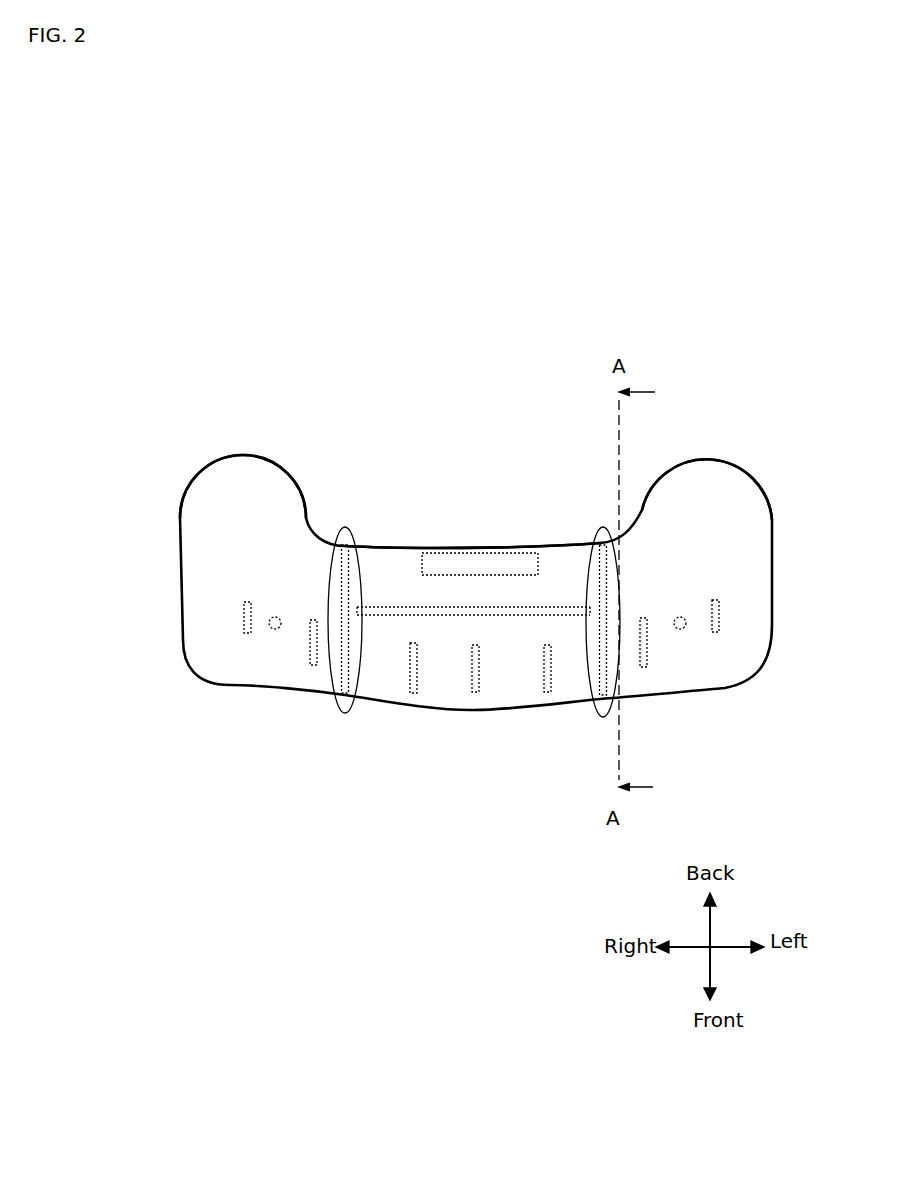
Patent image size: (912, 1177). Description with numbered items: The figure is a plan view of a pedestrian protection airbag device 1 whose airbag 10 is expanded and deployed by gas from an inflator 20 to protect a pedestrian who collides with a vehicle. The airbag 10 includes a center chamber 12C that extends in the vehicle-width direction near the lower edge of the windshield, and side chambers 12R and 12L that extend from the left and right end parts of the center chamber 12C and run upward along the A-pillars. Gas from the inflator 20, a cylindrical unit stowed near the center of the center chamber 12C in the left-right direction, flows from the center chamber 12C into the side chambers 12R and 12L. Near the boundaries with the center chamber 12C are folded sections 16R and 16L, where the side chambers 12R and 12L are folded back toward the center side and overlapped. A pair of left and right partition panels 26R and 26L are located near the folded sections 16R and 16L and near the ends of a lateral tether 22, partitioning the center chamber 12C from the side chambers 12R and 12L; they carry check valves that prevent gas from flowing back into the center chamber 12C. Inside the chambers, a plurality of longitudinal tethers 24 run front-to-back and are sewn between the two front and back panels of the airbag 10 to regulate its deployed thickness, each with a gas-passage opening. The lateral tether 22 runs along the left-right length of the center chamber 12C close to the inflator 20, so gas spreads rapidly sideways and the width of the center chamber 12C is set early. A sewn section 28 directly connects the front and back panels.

The pedestrian protection airbag device 1 is at (575, 362).
The airbag 10 is at (275, 458).
The right side chamber 12R is at (203, 477).
The left side chamber 12L is at (716, 462).
The center chamber 12C is at (562, 565).
The right folded section 16R is at (343, 527).
The left folded section 16L is at (603, 717).
The inflator 20 is at (442, 553).
The lateral tether 22 is at (392, 607).
The longitudinal tether 24 is at (243, 622).
The right partition panel 26R is at (343, 683).
The left partition panel 26L is at (603, 687).
The sewn section 28 is at (281, 618).